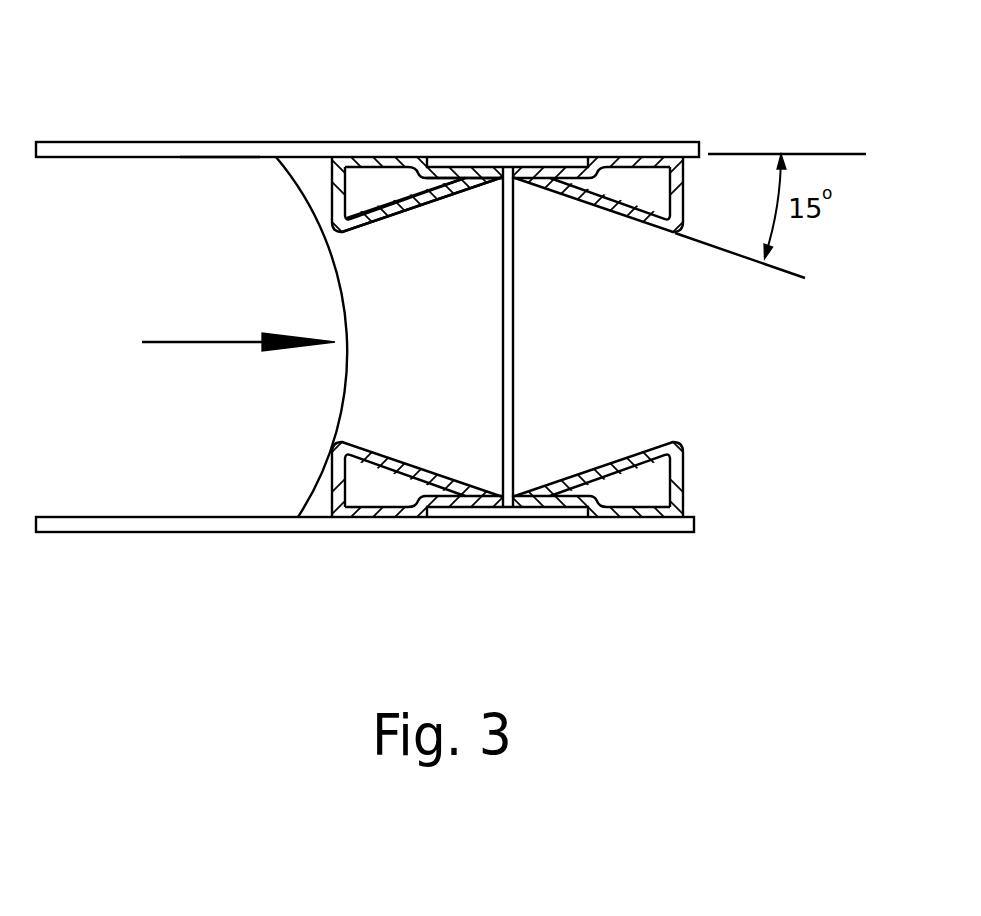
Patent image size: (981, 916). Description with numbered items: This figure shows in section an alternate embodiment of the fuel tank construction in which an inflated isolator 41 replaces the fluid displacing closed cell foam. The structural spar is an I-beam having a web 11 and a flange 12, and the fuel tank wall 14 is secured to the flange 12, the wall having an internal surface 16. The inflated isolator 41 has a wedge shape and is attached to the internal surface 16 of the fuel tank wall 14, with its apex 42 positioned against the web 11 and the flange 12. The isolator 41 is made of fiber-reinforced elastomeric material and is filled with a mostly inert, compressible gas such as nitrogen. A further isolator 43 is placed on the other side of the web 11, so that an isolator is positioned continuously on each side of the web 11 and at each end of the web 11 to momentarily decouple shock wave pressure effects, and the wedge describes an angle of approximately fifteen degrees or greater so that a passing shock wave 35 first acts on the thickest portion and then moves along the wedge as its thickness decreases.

The fuel tank wall 14 is at (158, 152).
The internal surface 16 is at (212, 157).
The shock wave 35 is at (312, 497).
The web 11 is at (507, 309).
The flange 12 is at (451, 162).
The flange member 43 is at (362, 200).
The inflated isolator 41 is at (398, 208).
The apex 42 is at (497, 173).